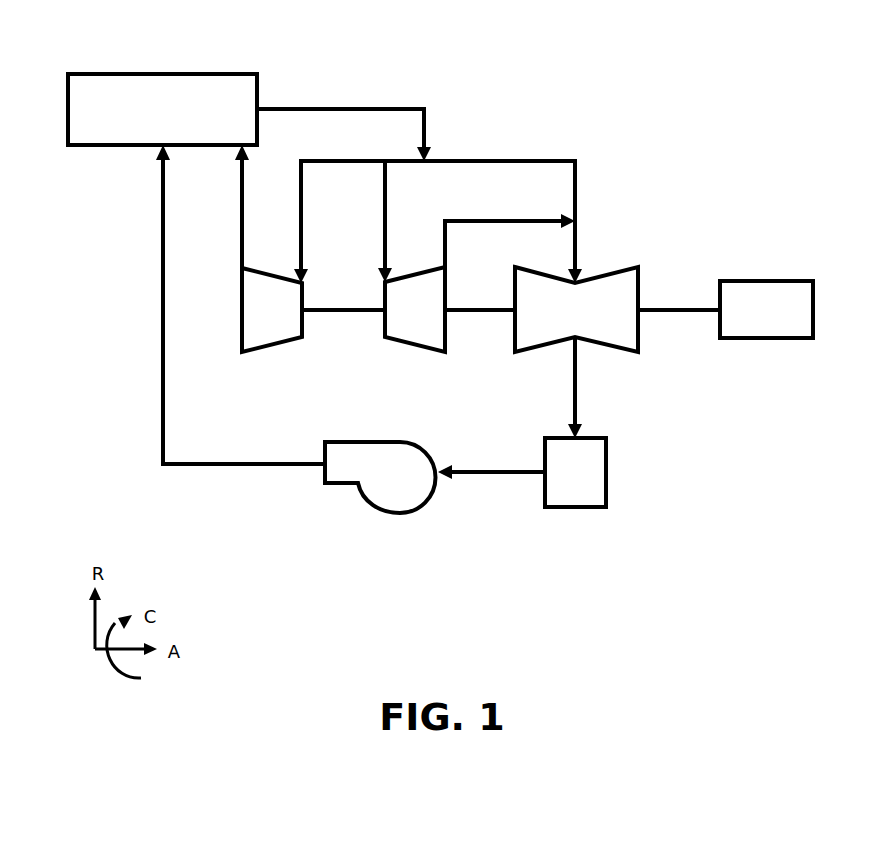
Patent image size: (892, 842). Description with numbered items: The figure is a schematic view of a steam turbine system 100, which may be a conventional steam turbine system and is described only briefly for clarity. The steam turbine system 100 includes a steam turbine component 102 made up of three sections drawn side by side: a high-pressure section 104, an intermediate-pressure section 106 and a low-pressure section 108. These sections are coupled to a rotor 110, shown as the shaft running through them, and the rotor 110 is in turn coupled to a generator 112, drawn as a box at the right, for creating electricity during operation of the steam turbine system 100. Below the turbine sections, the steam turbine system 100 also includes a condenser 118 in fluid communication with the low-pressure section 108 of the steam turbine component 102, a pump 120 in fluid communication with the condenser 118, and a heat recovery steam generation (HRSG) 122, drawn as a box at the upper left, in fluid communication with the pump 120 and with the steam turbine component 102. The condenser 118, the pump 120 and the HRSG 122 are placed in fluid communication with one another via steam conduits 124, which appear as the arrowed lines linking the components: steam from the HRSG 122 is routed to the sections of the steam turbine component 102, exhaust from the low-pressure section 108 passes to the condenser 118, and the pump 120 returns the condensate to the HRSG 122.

The steam turbine system 100 is at (437, 66).
The steam turbine component 102 is at (232, 390).
The high-pressure section 104 is at (278, 347).
The intermediate-pressure section 106 is at (405, 347).
The low-pressure section 108 is at (620, 352).
The rotor 110 is at (472, 312).
The generator 112 is at (736, 281).
The condenser 118 is at (570, 507).
The pump 120 is at (393, 512).
The heat recovery steam generation (HRSG) 122 is at (197, 74).
The steam conduits 124 is at (347, 109).